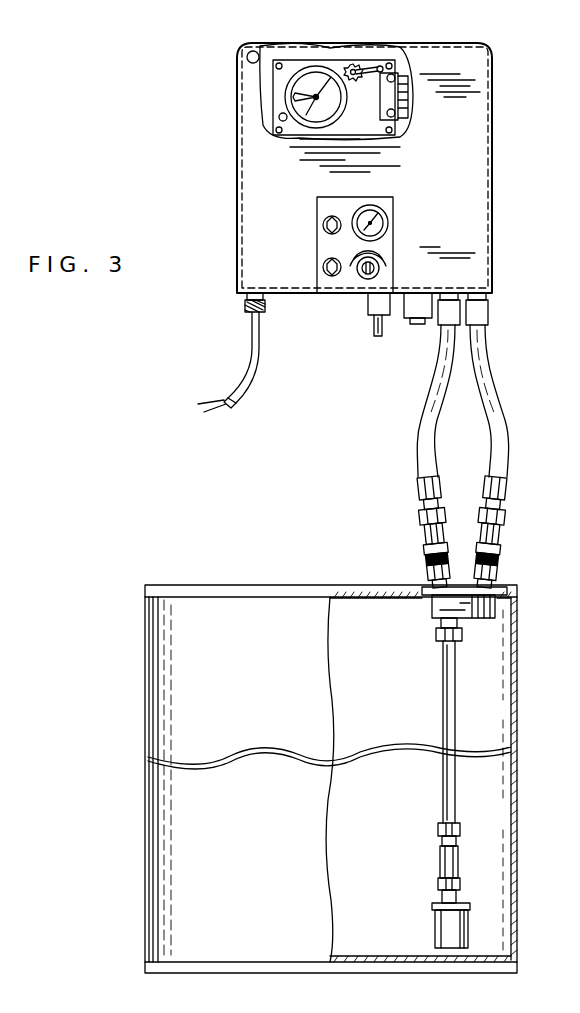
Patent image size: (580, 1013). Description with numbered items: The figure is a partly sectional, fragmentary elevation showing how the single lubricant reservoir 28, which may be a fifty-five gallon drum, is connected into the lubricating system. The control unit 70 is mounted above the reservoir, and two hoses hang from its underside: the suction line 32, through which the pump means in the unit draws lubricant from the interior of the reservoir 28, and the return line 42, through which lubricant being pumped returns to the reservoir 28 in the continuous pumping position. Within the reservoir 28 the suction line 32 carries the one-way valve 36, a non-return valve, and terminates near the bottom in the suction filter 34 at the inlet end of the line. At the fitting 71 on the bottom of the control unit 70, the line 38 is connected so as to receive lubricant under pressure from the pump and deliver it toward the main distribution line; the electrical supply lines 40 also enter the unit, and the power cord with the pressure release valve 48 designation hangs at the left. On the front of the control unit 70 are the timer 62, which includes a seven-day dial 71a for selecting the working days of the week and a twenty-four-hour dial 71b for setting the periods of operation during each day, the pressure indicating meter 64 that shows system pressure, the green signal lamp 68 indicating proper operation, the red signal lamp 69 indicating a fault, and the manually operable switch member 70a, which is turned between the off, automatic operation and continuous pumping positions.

The lubricant reservoir 28 is at (294, 702).
The suction line 32 is at (420, 437).
The suction filter 34 is at (440, 917).
The one-way valve 36 is at (445, 857).
The line 38 is at (375, 330).
The electrical supply lines 40 is at (416, 320).
The return line 42 is at (497, 416).
The pressure release valve 48 is at (252, 379).
The timer 62 is at (270, 105).
The pressure indicating meter 64 is at (382, 223).
The signal lamp 68 is at (322, 227).
The signal lamp 69 is at (323, 267).
The control unit 70 is at (230, 192).
The manually operable switch member 70a is at (380, 268).
The fitting 71 is at (368, 306).
The 7-day dial 71a is at (348, 64).
The 24-hour dial 71b is at (313, 74).